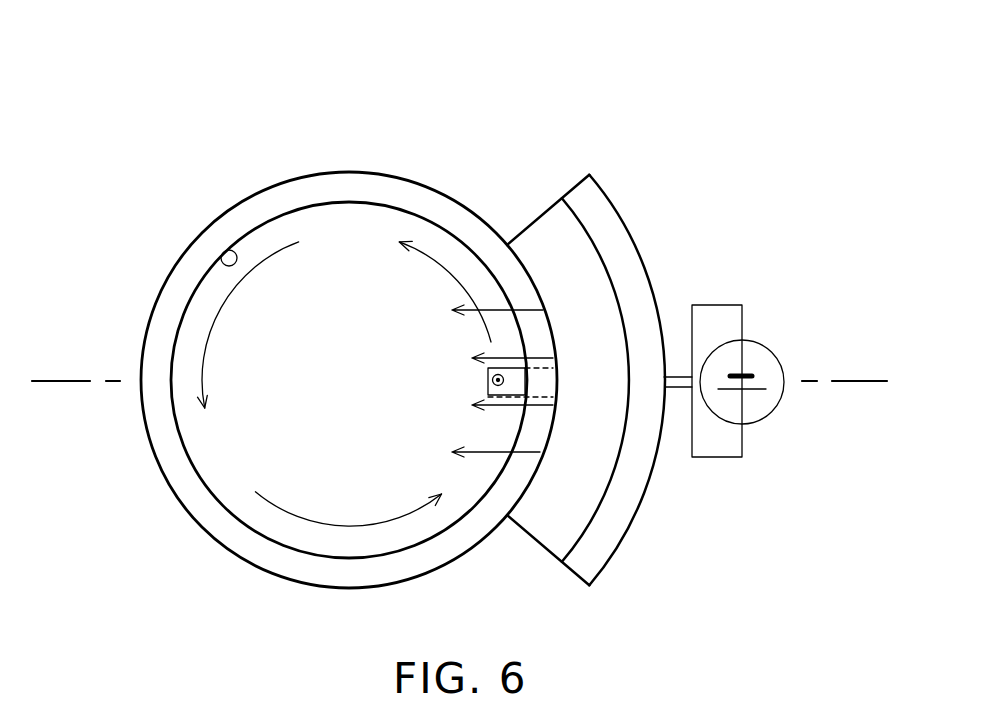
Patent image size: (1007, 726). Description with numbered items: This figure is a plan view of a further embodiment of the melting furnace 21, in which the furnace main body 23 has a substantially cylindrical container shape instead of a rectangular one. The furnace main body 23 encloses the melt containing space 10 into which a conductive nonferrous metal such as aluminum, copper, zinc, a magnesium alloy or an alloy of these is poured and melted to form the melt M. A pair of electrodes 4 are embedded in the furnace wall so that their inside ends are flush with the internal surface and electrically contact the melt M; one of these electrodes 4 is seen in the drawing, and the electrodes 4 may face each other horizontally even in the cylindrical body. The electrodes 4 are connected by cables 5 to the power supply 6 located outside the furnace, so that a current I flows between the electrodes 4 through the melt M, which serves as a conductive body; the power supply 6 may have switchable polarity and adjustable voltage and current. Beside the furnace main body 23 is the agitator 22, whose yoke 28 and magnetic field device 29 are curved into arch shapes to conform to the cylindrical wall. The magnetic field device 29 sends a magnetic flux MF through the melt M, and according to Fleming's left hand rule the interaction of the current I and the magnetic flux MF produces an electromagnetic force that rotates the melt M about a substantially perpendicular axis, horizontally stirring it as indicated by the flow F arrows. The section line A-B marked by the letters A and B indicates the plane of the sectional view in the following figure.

The melting furnace 21 is at (332, 113).
The furnace main body 23 is at (383, 187).
The melt containing space 10 is at (236, 250).
The agitator 22 is at (593, 314).
The yoke 28 is at (587, 200).
The magnetic field device 29 is at (548, 235).
The electrode 4 is at (488, 378).
The cable 5 is at (715, 305).
The power supply 6 is at (780, 365).
The fluid flow F is at (212, 327).
The melt M is at (322, 487).
The magnetic flux MF is at (453, 298).
The current I is at (499, 392).
The line A-B A is at (62, 382).
The line A- B is at (860, 382).